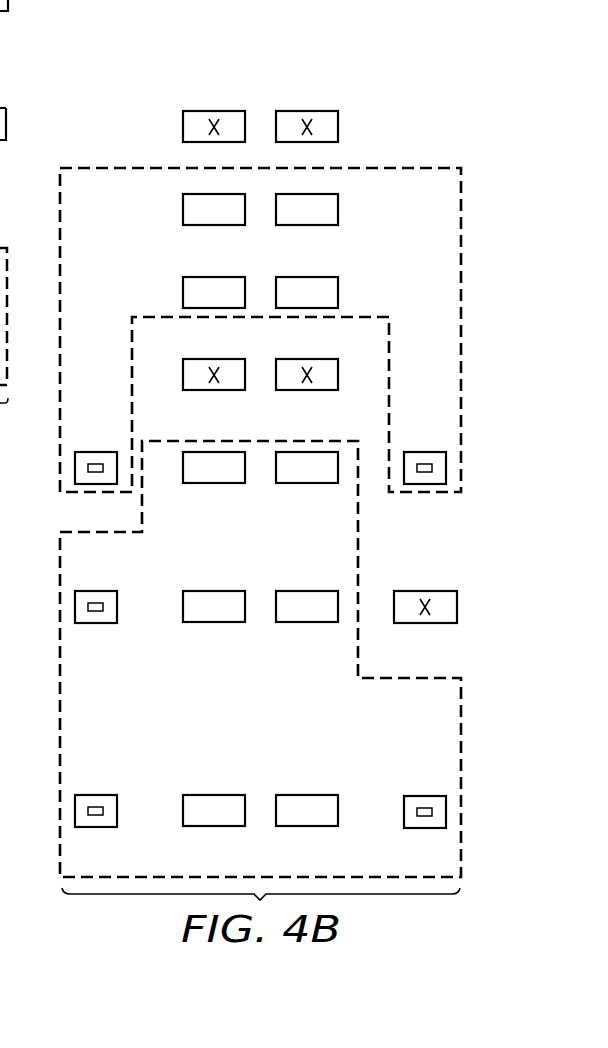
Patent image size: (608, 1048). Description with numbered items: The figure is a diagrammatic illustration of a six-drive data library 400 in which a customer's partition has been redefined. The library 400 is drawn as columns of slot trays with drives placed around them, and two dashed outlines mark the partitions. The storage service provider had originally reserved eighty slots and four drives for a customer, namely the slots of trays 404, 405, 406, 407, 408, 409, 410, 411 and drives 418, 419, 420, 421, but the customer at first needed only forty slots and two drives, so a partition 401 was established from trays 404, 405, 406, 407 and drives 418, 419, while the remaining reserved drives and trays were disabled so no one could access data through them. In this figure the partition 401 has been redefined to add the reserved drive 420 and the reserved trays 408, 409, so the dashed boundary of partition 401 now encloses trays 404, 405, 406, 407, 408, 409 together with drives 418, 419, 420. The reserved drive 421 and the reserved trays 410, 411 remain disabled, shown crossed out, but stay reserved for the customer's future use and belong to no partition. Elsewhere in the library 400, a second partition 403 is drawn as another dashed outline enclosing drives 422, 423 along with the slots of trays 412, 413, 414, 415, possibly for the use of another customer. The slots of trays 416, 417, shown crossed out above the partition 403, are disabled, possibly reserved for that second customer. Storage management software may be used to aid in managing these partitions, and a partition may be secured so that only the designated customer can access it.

The library 400 is at (226, 73).
The partition 401 is at (59, 699).
The partition 403 is at (436, 166).
The tray 404 is at (213, 794).
The tray 405 is at (308, 794).
The tray 406 is at (212, 590).
The tray 407 is at (304, 590).
The reserved tray 408 is at (205, 485).
The reserved tray 409 is at (297, 485).
The reserved tray 410 is at (207, 391).
The reserved tray 411 is at (300, 391).
The tray 412 is at (182, 291).
The tray 413 is at (339, 291).
The tray 414 is at (182, 208).
The tray 415 is at (339, 208).
The tray 416 is at (182, 125).
The tray 417 is at (339, 125).
The drive 418 is at (96, 794).
The drive 419 is at (424, 795).
The reserved drive 420 is at (97, 625).
The reserved drive 421 is at (424, 590).
The drive 422 is at (94, 451).
The drive 423 is at (424, 451).